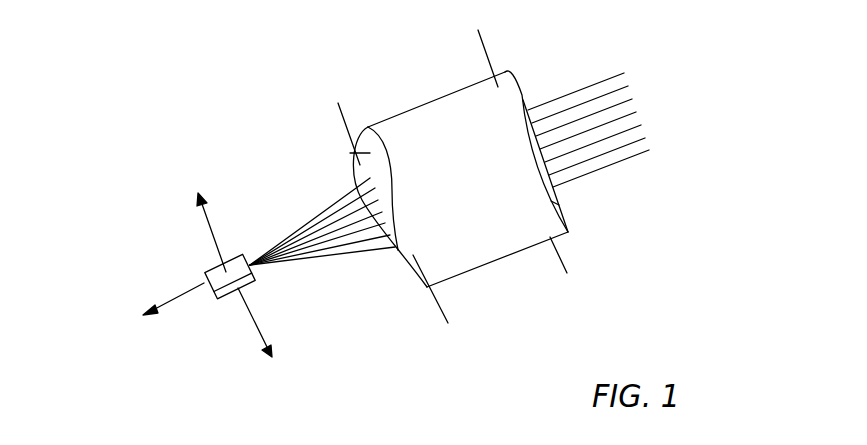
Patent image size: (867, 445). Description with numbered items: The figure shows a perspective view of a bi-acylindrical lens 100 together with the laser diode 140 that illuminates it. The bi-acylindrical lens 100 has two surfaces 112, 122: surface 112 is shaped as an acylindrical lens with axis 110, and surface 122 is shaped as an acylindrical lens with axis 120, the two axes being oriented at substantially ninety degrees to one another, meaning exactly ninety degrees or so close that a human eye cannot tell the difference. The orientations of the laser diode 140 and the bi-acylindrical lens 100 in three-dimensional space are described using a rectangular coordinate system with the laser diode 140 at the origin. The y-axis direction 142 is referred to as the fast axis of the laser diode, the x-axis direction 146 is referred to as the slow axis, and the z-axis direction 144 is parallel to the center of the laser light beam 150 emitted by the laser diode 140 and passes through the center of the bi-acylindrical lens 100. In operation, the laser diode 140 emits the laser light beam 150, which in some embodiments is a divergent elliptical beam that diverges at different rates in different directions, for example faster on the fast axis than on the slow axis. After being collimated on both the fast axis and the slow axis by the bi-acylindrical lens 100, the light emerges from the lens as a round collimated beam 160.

The bi-acylindrical lens 100 is at (453, 189).
The axis 110 is at (341, 111).
The surface 112 is at (352, 153).
The axis 120 is at (479, 37).
The surface 122 is at (560, 203).
The laser diode 140 is at (205, 271).
The y-axis direction 142 is at (208, 221).
The z-axis direction 144 is at (173, 303).
The x-axis direction 146 is at (250, 312).
The laser light beam 150 is at (294, 206).
The round collimated beam 160 is at (573, 75).